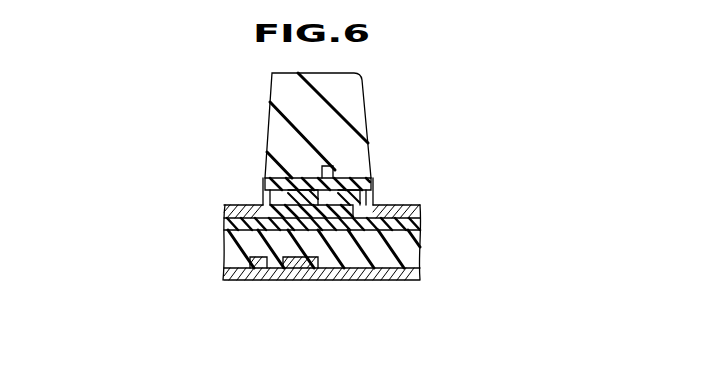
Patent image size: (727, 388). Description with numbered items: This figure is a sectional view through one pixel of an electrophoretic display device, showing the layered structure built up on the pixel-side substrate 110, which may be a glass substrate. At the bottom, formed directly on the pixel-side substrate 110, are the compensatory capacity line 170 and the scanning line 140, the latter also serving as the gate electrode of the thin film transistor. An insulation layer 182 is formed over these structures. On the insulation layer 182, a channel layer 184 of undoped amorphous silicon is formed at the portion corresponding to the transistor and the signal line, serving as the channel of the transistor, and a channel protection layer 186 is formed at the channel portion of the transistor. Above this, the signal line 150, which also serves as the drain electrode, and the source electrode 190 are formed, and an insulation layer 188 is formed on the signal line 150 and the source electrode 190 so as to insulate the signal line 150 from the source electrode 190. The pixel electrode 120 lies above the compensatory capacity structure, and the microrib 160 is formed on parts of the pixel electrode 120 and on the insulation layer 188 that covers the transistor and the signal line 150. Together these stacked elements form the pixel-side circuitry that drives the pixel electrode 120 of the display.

The pixel-side substrate 110 is at (412, 275).
The pixel electrode 120 is at (420, 207).
The scanning line 140 is at (300, 268).
The signal line 150 is at (280, 173).
The microrib 160 is at (345, 103).
The compensatory capacity line 170 is at (243, 280).
The insulation layer 182 is at (412, 255).
The channel layer 184 is at (338, 235).
The channel protection layer 186 is at (280, 189).
The insulation layer 188 is at (224, 221).
The source electrode 190 is at (372, 193).